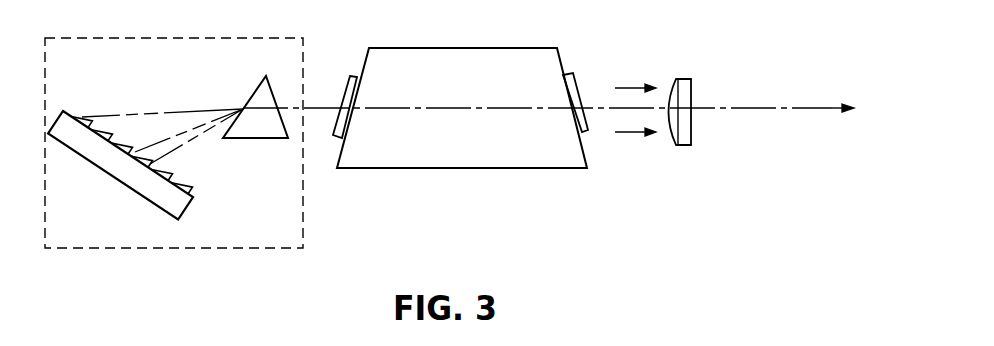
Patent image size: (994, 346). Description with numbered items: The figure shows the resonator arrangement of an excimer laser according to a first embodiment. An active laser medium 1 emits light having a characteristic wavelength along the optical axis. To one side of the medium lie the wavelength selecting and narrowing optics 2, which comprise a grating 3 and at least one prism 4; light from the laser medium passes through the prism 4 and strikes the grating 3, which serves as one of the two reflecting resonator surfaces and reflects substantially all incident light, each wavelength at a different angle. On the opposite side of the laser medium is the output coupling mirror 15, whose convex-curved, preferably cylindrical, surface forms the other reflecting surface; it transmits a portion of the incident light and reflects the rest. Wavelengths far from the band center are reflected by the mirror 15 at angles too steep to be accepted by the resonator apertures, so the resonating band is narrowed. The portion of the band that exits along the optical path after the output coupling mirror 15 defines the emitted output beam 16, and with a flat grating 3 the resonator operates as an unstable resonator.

The active laser medium 1 is at (449, 153).
The wavelength selecting and narrowing optics 2 is at (133, 69).
The grating 3 is at (139, 195).
The prism 4 is at (244, 133).
The output coupling mirror 15 is at (682, 79).
The output beam 16 is at (873, 108).